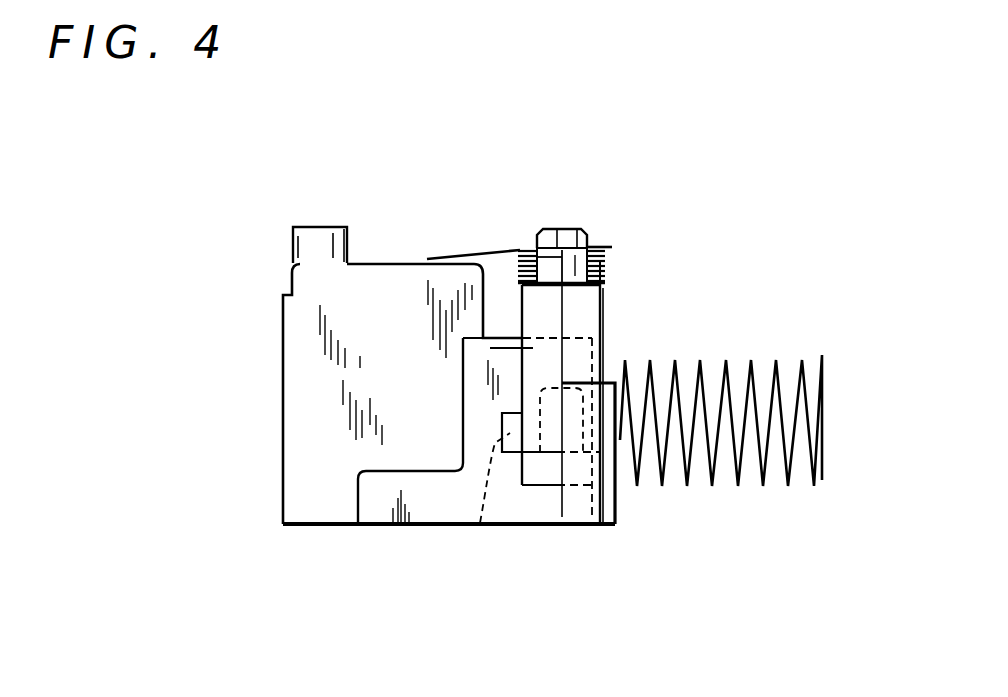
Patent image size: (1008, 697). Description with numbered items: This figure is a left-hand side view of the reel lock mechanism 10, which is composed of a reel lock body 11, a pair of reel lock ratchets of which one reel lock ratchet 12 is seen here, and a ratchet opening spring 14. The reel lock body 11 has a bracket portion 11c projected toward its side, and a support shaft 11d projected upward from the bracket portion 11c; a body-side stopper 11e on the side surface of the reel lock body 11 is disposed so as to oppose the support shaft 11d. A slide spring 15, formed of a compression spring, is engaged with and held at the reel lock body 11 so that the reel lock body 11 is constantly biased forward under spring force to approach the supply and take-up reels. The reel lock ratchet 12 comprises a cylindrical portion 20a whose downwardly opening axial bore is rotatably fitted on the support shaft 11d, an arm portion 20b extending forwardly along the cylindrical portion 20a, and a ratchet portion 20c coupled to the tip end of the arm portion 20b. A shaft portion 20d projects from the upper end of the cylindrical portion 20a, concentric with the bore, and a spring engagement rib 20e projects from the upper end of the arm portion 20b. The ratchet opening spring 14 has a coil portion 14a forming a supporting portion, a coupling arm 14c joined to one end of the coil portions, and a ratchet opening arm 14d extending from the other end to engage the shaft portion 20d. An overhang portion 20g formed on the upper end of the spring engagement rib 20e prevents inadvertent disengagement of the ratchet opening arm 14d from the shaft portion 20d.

The reel lock mechanism 10 is at (398, 226).
The reel lock body 11 is at (300, 341).
The bracket portion 11c is at (548, 487).
The support shaft 11d is at (480, 532).
The body-side stopper 11e is at (502, 433).
The reel lock ratchet 12 is at (612, 319).
The ratchet opening spring 14 is at (596, 236).
The coil portion 14a is at (593, 246).
The coupling arm 14c is at (475, 250).
The ratchet opening arm 14d is at (552, 289).
The slide spring 15 is at (738, 467).
The cylindrical portion 20a is at (535, 350).
The arm portion 20b is at (600, 349).
The ratchet portion 20c is at (615, 490).
The shaft portion 20d is at (570, 228).
The spring engagement rib 20e is at (600, 264).
The overhang portion 20g is at (553, 228).